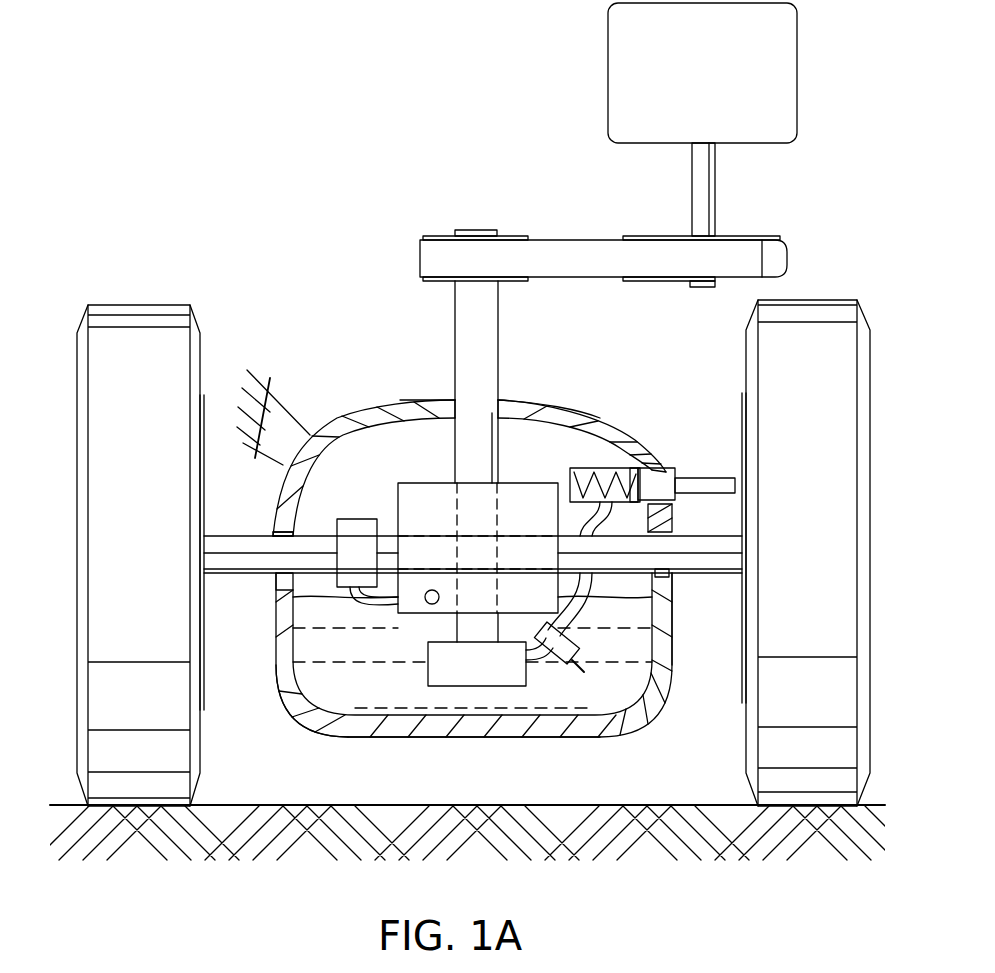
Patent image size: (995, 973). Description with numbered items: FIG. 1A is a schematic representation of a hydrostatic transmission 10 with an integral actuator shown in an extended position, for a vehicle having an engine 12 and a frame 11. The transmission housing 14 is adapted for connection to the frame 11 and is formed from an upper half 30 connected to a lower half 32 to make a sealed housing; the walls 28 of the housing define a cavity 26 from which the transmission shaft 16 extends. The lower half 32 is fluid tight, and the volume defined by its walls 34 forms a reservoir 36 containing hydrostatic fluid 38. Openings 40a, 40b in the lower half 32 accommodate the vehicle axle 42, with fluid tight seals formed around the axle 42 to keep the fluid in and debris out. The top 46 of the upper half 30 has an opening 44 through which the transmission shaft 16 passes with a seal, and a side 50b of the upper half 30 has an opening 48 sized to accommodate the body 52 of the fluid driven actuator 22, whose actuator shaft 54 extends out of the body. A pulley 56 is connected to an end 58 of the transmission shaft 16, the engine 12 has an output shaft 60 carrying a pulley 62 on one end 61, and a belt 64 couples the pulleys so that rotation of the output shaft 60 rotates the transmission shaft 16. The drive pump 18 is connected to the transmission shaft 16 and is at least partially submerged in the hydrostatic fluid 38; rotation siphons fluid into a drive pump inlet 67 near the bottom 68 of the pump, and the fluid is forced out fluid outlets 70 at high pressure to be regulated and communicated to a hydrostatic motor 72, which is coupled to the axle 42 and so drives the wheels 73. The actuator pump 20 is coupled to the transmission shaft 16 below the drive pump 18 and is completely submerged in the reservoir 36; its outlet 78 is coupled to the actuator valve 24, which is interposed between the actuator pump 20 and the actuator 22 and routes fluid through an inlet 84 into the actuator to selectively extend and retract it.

The hydrostatic transmission 10 is at (330, 125).
The frame 11 is at (240, 380).
The engine 12 is at (702, 73).
The transmission housing 14 is at (322, 388).
The transmission shaft 16 is at (466, 331).
The drive pump 18 is at (478, 548).
The actuator pump 20 is at (472, 652).
The fluid driven actuator 22 is at (628, 462).
The actuator valve 24 is at (582, 648).
The cavity 26 is at (333, 385).
The walls 28 is at (300, 640).
The upper half 30 is at (578, 410).
The lower half 32 is at (433, 722).
The walls 34 is at (664, 612).
The reservoir 36 is at (288, 588).
The hydrostatic fluid 38 is at (302, 703).
The opening 40a is at (278, 543).
The opening 40b is at (665, 562).
The vehicle axle 42 is at (218, 545).
The opening 44 is at (494, 416).
The top 46 is at (431, 407).
The opening 48 is at (656, 470).
The side 50b is at (674, 518).
The body 52 is at (576, 472).
The actuator shaft 54 is at (710, 485).
The pulley 56 is at (434, 236).
The end 58 is at (470, 230).
The output shaft 60 is at (716, 183).
The end 61 is at (698, 288).
The pulley 62 is at (636, 283).
The belt 64 is at (586, 238).
The drive pump inlet 67 is at (432, 606).
The bottom 68 is at (447, 620).
The fluid outlets 70 is at (410, 593).
The hydrostatic motor 72 is at (357, 553).
The wheels 73 is at (473, 553).
The outlet 78 is at (541, 660).
The inlet 84 is at (620, 510).